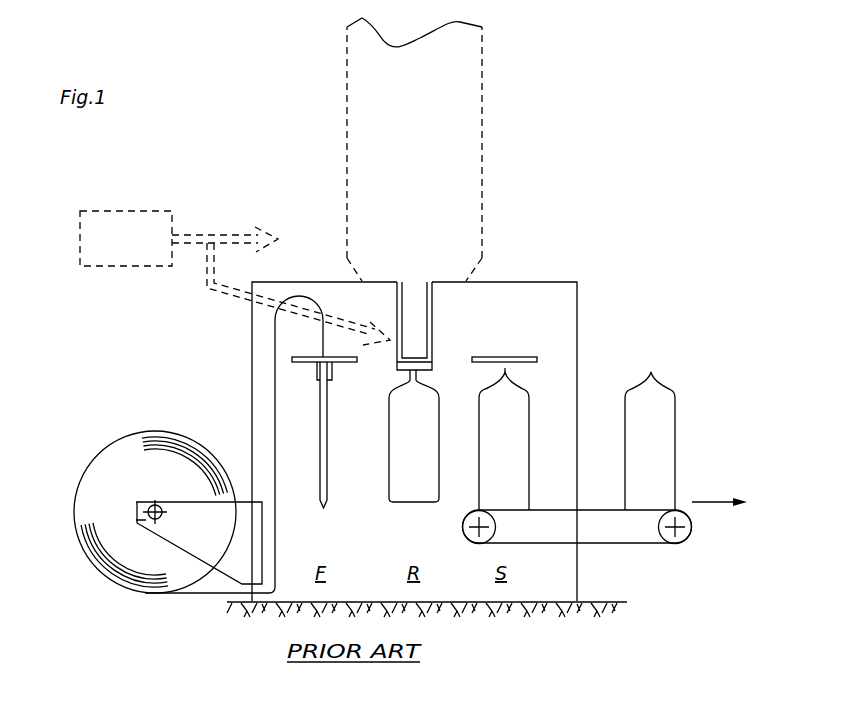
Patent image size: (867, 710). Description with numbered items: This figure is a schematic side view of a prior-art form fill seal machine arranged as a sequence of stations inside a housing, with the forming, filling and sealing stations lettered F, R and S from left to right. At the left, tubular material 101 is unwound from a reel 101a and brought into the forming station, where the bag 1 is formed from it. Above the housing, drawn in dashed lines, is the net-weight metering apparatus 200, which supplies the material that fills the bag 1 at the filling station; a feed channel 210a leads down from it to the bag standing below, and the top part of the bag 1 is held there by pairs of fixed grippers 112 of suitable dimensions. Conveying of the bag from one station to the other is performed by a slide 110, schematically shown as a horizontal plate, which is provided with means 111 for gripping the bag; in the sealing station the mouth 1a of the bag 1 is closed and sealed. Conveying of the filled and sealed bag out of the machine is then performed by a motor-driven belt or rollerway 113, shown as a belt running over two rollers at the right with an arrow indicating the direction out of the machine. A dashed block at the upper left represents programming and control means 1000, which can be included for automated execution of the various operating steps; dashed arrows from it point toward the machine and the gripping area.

The net-weight metering apparatus 200 is at (365, 73).
The programming and control means 1000 is at (235, 278).
The feed channel 210a is at (413, 357).
The fixed grippers 112 is at (422, 368).
The slide 110 is at (297, 357).
The gripping means 111 is at (318, 368).
The bag 1 is at (322, 468).
The mouth 1a is at (505, 372).
The reel 101a is at (117, 463).
The tubular material 101 is at (210, 592).
The conveyor 113 is at (648, 544).